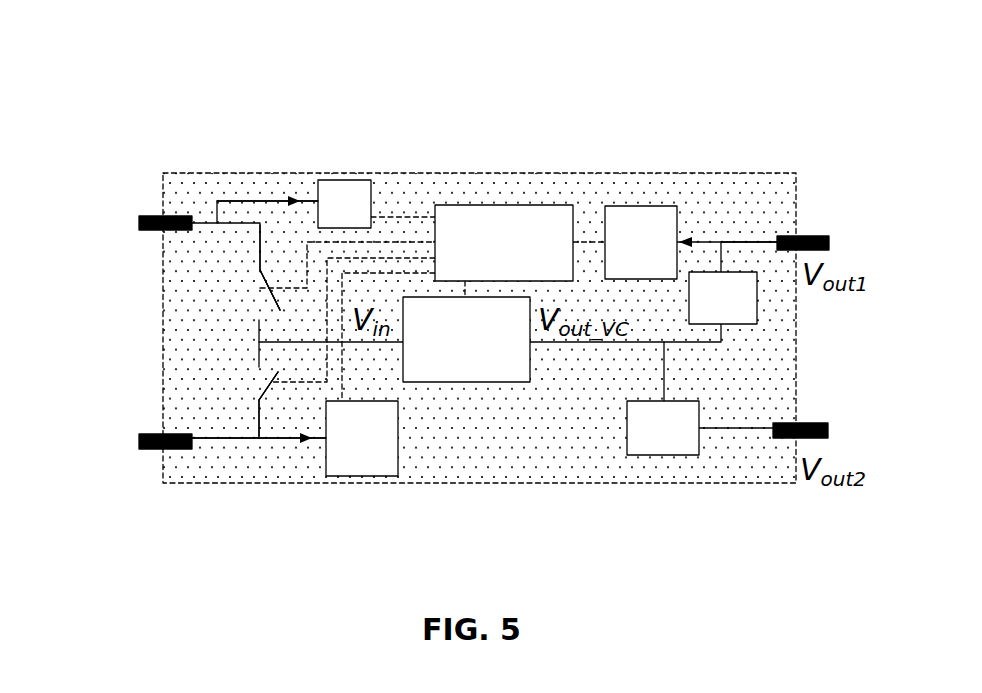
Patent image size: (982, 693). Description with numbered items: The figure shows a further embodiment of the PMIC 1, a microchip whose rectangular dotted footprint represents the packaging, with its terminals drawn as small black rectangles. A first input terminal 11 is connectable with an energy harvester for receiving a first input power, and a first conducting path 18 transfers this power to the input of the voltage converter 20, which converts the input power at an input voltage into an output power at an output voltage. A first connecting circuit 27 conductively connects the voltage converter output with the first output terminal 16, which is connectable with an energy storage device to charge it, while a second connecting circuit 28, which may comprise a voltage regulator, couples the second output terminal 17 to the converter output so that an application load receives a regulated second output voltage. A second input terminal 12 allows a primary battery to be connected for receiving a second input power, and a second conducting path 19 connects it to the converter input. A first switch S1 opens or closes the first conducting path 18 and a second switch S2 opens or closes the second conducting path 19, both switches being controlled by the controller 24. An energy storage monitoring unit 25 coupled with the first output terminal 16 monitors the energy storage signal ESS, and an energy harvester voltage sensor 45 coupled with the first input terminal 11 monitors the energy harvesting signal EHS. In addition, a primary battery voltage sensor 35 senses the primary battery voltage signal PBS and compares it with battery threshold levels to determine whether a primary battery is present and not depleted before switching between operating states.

The PMIC 1 is at (178, 110).
The first input terminal 11 is at (139, 223).
The second input terminal 12 is at (139, 441).
The first output terminal 16 is at (829, 243).
The second output terminal 17 is at (828, 428).
The first conducting path 18 is at (260, 238).
The second conducting path 19 is at (257, 425).
The voltage converter 20 is at (492, 382).
The controller 24 is at (505, 205).
The energy storage monitoring unit 25 is at (640, 206).
The first connecting circuit 27 is at (757, 296).
The second connecting circuit 28 is at (665, 455).
The primary battery voltage sensor 35 is at (350, 476).
The energy harvester voltage sensor 45 is at (345, 180).
The first switch S1 is at (250, 292).
The second switch S2 is at (255, 388).
The energy harvesting signal EHS is at (296, 192).
The energy storage signal ESS is at (697, 232).
The primary battery voltage signal PBS is at (296, 452).